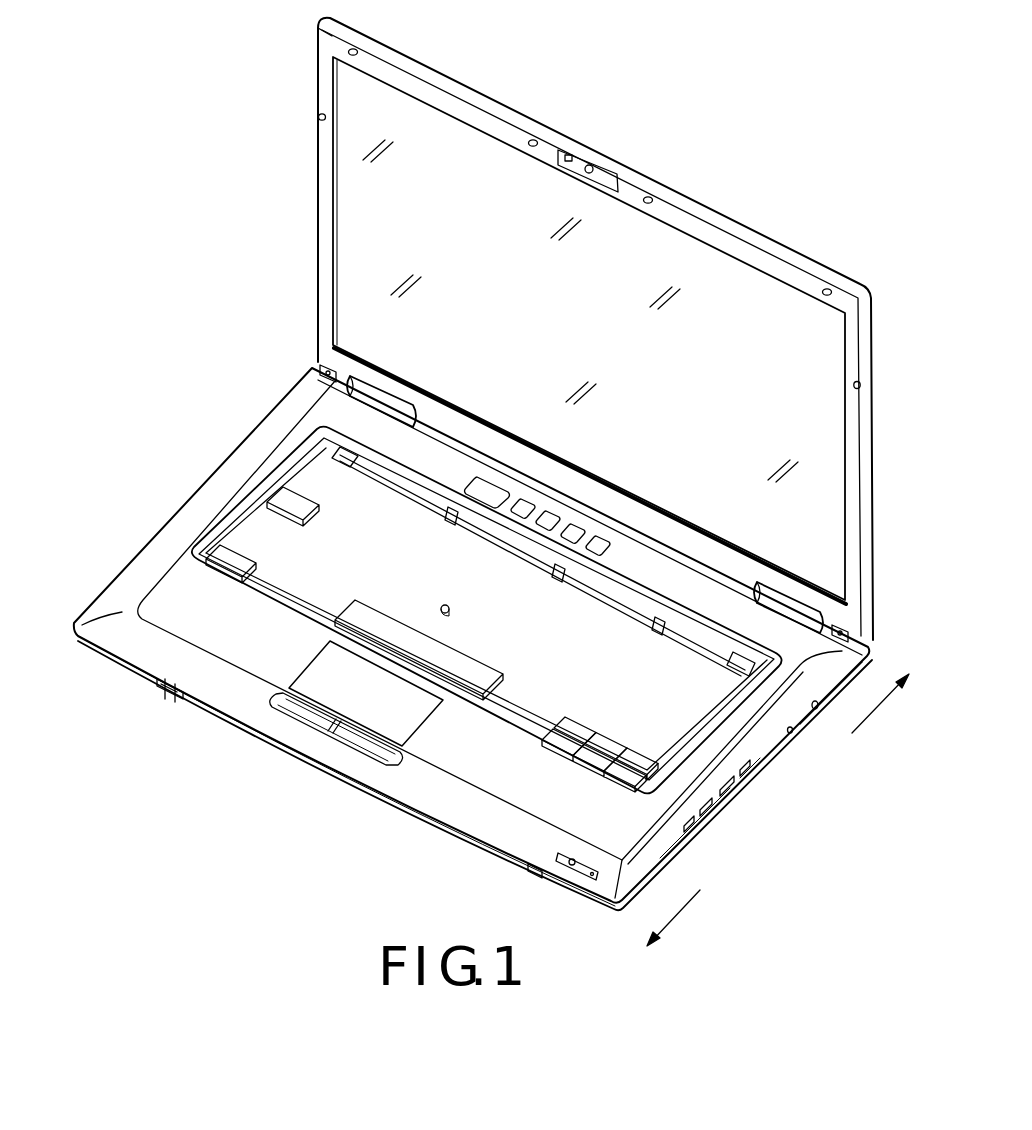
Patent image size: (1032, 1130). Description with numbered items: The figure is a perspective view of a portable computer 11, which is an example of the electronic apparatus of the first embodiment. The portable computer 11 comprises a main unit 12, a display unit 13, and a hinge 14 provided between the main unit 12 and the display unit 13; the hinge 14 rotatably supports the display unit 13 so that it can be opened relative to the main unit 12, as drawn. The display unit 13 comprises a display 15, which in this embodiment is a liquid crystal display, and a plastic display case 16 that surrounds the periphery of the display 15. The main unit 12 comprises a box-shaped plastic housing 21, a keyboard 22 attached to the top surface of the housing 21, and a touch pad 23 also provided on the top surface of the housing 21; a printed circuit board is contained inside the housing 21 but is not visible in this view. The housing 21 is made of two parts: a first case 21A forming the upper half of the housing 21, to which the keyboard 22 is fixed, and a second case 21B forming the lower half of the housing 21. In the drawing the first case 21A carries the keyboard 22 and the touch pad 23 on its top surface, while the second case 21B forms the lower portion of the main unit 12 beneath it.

The portable computer 11 is at (699, 118).
The main unit 12 is at (208, 436).
The display unit 13 is at (297, 184).
The hinge 14 is at (390, 400).
The display 15 is at (812, 360).
The display case 16 is at (762, 258).
The housing 21 is at (104, 578).
The first case 21A is at (190, 532).
The second case 21B is at (148, 672).
The keyboard 22 is at (695, 727).
The touch pad 23 is at (390, 712).